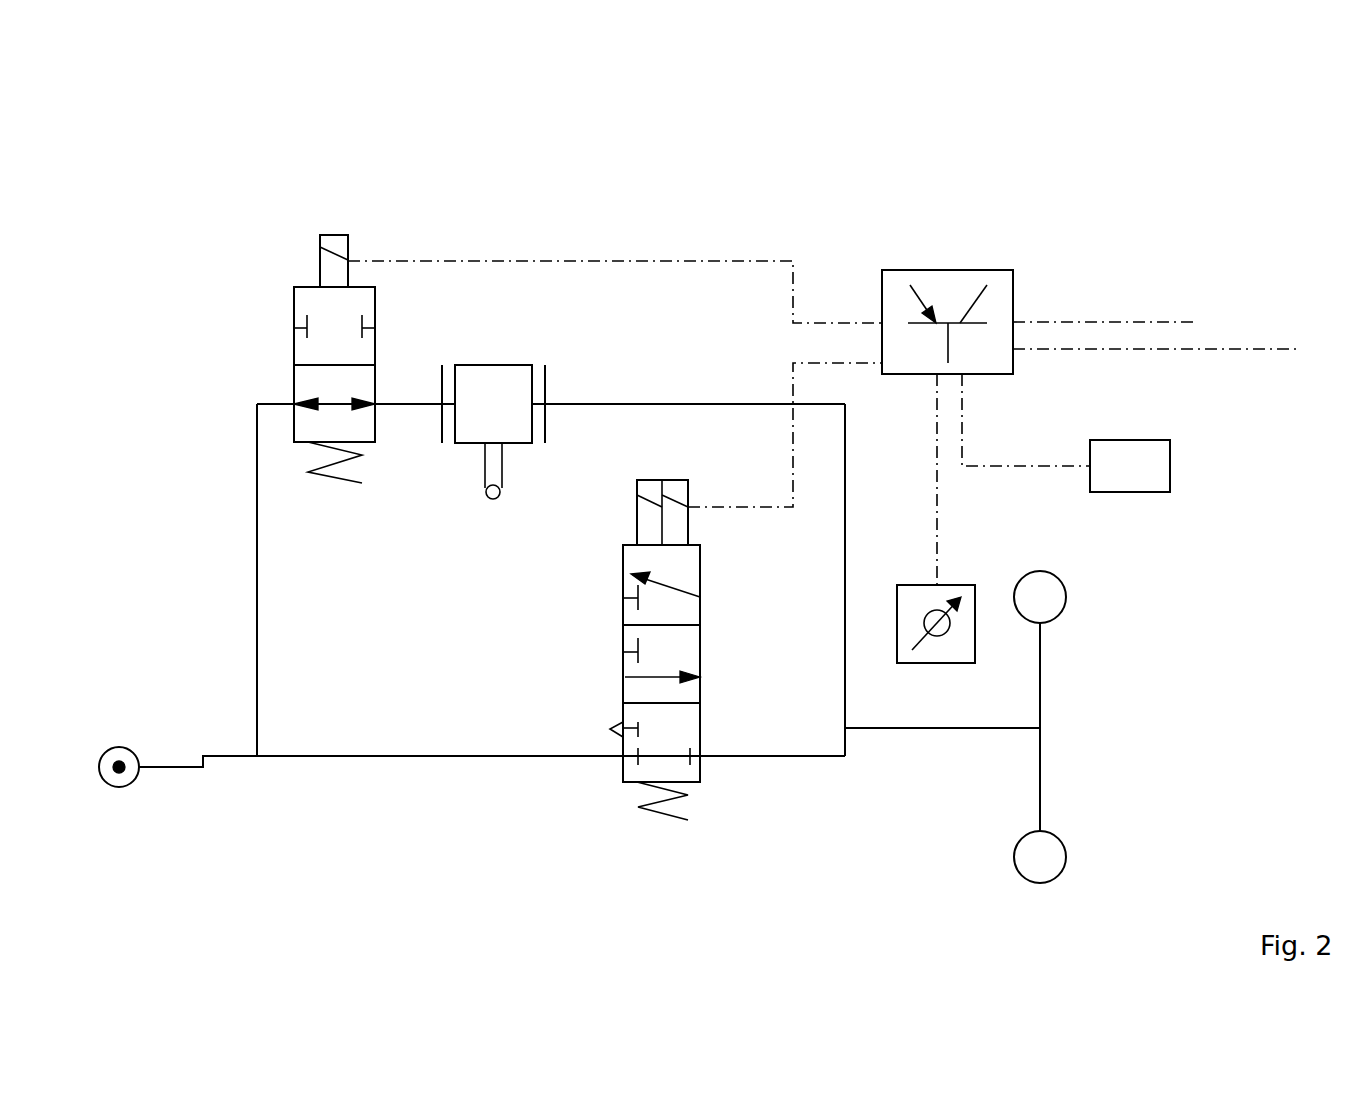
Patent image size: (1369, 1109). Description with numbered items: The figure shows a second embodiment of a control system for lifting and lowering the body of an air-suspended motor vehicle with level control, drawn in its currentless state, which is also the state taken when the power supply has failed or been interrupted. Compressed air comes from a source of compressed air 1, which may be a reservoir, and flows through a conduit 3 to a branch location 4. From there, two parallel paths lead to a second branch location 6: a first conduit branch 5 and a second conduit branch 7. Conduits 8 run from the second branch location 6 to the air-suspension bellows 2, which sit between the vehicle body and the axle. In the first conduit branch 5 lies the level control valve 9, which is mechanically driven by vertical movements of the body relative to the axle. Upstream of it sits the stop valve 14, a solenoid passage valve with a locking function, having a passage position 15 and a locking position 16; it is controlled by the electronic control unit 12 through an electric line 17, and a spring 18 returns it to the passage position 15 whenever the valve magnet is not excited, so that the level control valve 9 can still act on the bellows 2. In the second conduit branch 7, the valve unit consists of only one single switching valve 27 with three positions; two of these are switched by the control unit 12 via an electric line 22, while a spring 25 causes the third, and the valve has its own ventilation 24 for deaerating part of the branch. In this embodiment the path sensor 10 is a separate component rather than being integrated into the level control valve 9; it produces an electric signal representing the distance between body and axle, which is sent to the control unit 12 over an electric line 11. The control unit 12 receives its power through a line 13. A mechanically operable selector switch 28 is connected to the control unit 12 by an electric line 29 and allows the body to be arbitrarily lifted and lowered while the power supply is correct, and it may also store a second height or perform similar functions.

The source of compressed air 1 is at (122, 772).
The air-suspension bellows 2 is at (1052, 598).
The conduit 3 is at (183, 767).
The branch location 4 is at (257, 756).
The first conduit branch 5 is at (400, 404).
The second branch location 6 is at (847, 730).
The second conduit branch 7 is at (388, 758).
The conduits 8 is at (997, 728).
The level control valve 9 is at (485, 348).
The path sensor 10 is at (942, 670).
The electric line 11 is at (938, 530).
The electronic control unit 12 is at (945, 268).
The line 13 is at (1072, 322).
The stop valve 14 is at (283, 343).
The passage position 15 is at (317, 382).
The locking position 16 is at (279, 224).
The electric line 17 is at (698, 260).
The spring 18 is at (363, 460).
The electric line 22 is at (823, 363).
The ventilation 24 is at (617, 737).
The spring 25 is at (668, 817).
The switching valve 27 is at (544, 762).
The selector switch 28 is at (1145, 457).
The electric line 29 is at (1111, 419).